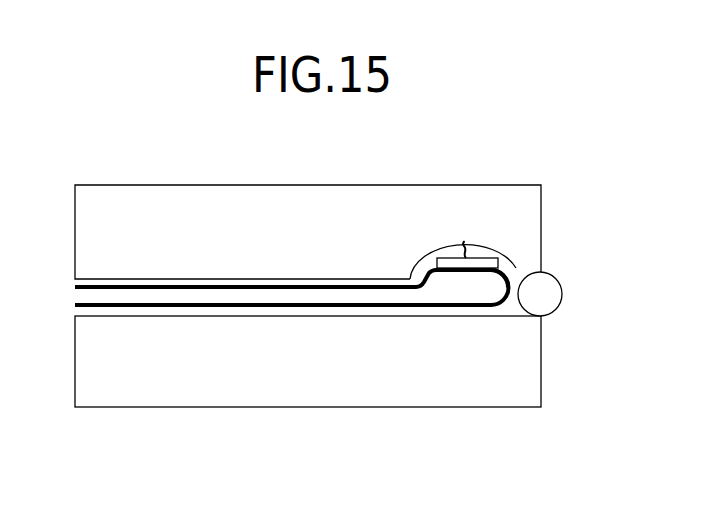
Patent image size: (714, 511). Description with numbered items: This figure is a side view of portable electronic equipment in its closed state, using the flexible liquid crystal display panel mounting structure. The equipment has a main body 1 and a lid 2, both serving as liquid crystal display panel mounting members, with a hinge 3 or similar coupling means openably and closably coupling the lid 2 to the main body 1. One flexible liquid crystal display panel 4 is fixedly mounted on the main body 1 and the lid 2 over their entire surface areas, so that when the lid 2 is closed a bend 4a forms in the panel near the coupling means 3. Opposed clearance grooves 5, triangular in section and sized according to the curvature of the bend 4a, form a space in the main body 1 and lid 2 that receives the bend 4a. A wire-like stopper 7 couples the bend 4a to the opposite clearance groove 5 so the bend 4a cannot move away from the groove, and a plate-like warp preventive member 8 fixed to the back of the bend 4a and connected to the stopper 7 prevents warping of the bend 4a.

The main body 1 is at (190, 393).
The lid 2 is at (355, 187).
The hinge 3 is at (563, 285).
The flexible liquid crystal display panel 4 is at (223, 288).
The bend 4a is at (503, 268).
The clearance groove 5 is at (500, 258).
The stopper 7 is at (468, 243).
The warp preventive member 8 is at (443, 252).